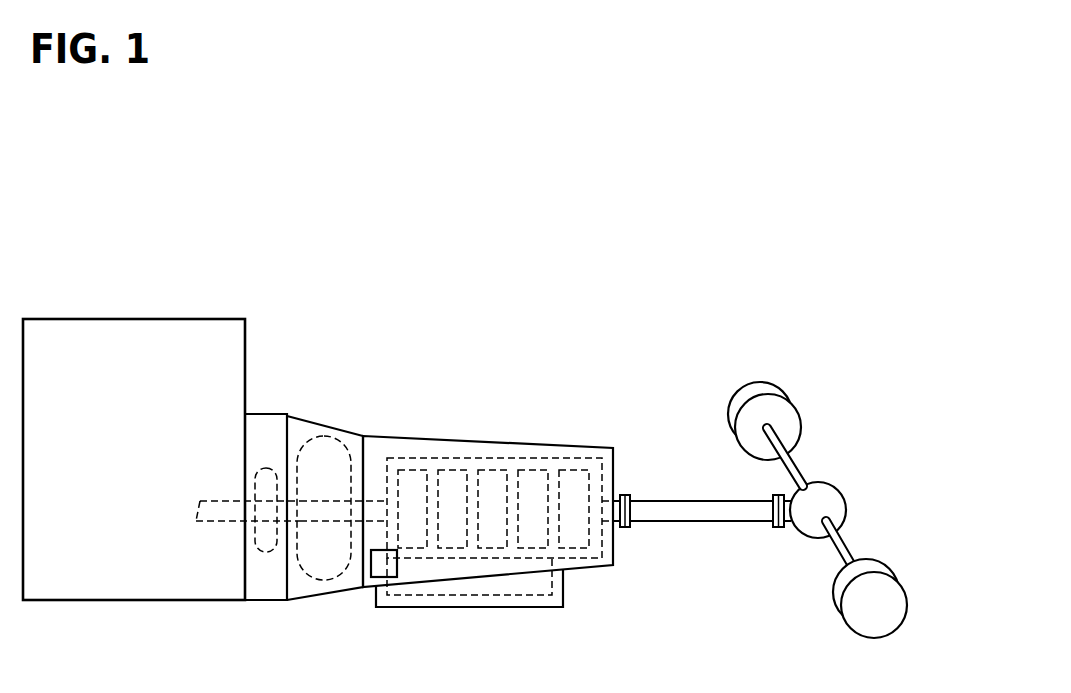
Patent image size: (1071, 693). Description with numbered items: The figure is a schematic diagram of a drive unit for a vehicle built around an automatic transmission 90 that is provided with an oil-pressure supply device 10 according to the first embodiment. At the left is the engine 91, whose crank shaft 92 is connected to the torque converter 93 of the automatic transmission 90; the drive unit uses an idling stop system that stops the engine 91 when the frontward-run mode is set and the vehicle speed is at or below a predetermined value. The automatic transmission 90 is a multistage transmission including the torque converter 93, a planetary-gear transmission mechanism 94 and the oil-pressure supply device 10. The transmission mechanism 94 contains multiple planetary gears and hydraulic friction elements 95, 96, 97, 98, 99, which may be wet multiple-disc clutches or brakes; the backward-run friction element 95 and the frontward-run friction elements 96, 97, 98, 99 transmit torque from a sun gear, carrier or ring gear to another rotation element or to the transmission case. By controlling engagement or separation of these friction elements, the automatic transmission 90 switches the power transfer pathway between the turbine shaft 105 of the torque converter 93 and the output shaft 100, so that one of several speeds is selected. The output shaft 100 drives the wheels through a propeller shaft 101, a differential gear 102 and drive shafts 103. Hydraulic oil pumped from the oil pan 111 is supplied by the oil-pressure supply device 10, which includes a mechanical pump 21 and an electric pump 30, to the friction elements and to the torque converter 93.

The engine 91 is at (133, 319).
The crank shaft 92 is at (217, 523).
The mechanical pump 21 is at (263, 552).
The torque converter 93 is at (325, 436).
The turbine shaft 105 is at (358, 497).
The automatic transmission 90 is at (507, 443).
The planetary-gear transmission mechanism 94 is at (597, 456).
The backward-run friction element 95 is at (413, 470).
The frontward-run friction element 96 is at (453, 470).
The frontward-run friction element 97 is at (490, 470).
The frontward-run friction element 98 is at (542, 470).
The frontward-run friction element 99 is at (582, 470).
The electric pump 30 is at (397, 561).
The oil pan 111 is at (493, 607).
The oil-pressure supply device 10 is at (527, 595).
The output shaft 100 is at (620, 495).
The propeller shaft 101 is at (698, 512).
The differential gear 102 is at (830, 492).
The drive shaft 103 is at (797, 463).